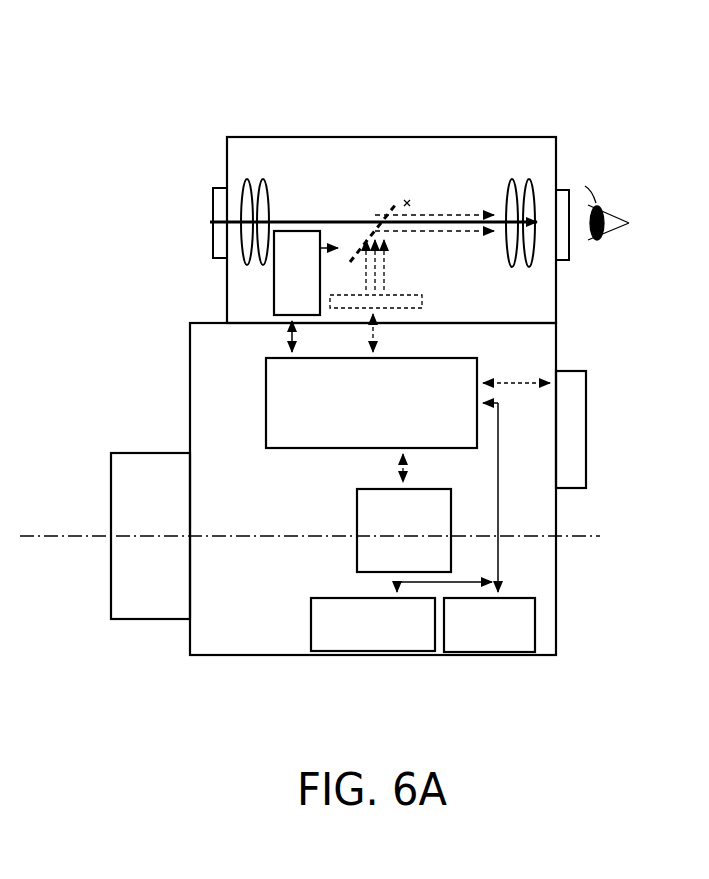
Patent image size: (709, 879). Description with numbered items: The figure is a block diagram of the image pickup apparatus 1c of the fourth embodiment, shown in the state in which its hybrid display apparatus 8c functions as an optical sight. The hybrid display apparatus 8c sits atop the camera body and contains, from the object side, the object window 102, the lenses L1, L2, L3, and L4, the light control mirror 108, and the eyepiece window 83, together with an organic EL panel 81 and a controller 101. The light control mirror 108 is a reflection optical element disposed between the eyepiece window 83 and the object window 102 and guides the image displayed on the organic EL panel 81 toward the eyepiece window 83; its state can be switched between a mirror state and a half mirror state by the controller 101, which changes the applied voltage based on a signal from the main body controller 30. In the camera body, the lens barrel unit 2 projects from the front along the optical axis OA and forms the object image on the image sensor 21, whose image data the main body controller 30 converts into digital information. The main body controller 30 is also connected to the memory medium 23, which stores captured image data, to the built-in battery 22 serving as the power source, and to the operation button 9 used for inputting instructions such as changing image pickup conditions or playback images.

The image pickup apparatus 1c is at (647, 60).
The lens barrel unit 2 is at (120, 585).
The optical axis OA is at (67, 537).
The hybrid display apparatus 8c is at (449, 160).
The operation button 9 is at (586, 443).
The image sensor 21 is at (357, 560).
The built-in battery 22 is at (530, 652).
The memory medium 23 is at (440, 652).
The main body controller 30 is at (371, 403).
The organic EL panel 81 is at (425, 302).
The eyepiece window 83 is at (572, 188).
The controller 101 is at (275, 292).
The object window 102 is at (215, 250).
The light control mirror 108 is at (390, 203).
The lens L1 is at (242, 192).
The lens L2 is at (262, 180).
The lens L3 is at (518, 180).
The lens L4 is at (538, 188).